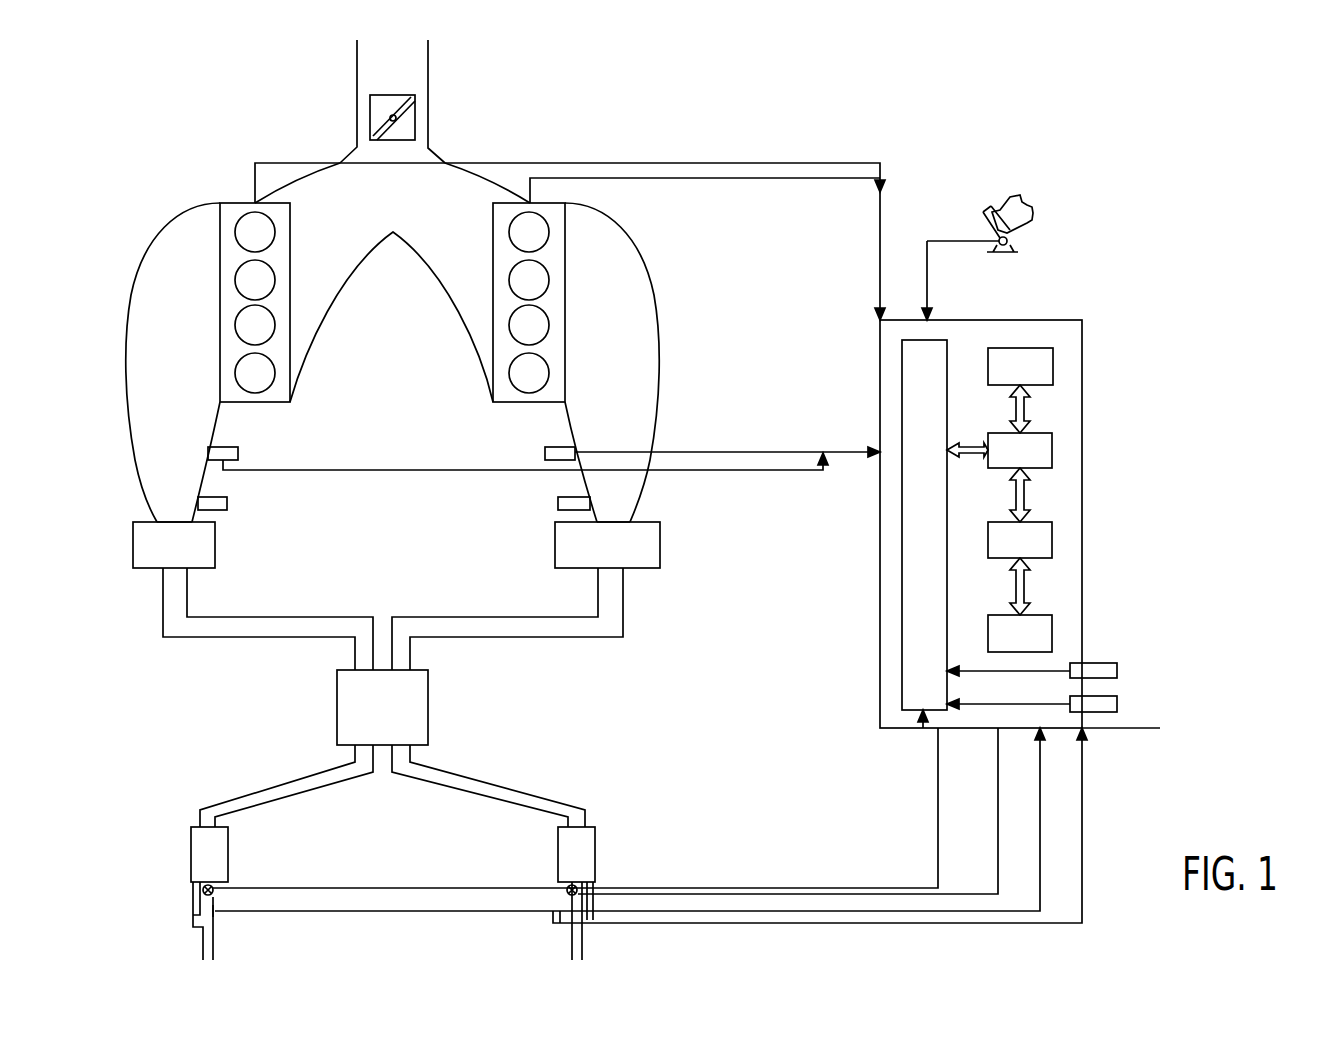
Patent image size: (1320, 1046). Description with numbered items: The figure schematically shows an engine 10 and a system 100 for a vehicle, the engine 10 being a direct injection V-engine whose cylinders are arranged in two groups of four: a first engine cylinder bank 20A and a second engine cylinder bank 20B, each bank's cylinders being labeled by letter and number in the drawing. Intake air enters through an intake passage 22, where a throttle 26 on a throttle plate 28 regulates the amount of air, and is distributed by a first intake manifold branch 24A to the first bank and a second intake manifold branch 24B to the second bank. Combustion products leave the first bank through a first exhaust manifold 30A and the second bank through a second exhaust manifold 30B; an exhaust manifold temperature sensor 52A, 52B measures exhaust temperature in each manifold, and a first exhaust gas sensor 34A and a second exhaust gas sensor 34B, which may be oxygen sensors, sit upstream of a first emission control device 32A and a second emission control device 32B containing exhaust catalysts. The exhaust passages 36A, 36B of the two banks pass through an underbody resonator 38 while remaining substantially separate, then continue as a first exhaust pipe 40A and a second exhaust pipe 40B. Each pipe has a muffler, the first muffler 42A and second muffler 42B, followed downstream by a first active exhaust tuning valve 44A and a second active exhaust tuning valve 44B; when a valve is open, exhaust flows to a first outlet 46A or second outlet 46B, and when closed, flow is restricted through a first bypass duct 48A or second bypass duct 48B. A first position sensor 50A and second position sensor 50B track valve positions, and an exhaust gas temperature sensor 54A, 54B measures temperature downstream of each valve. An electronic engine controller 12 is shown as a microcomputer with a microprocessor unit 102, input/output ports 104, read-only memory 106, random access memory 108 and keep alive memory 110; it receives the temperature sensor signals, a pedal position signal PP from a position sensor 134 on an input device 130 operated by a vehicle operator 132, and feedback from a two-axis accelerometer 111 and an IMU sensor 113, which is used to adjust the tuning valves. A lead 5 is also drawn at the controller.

The engine 10 is at (231, 108).
The system 100 is at (557, 68).
The intake passage 22 is at (402, 77).
The throttle 26 is at (360, 105).
The throttle plate 28 is at (394, 122).
The second engine cylinder bank 20B is at (256, 203).
The first engine cylinder bank 20A is at (530, 203).
The second intake manifold branch 24B is at (318, 231).
The first intake manifold branch 24A is at (440, 231).
The second exhaust manifold 30B is at (148, 430).
The first exhaust manifold 30A is at (612, 430).
The exhaust manifold temperature sensor 52B is at (238, 450).
The exhaust manifold temperature sensor 52A is at (545, 450).
The second exhaust gas sensor 34B is at (227, 500).
The first exhaust gas sensor 34A is at (558, 500).
The second emission control device 32B is at (159, 555).
The first emission control device 32A is at (592, 555).
The exhaust passage 36B is at (283, 615).
The exhaust passage 36A is at (487, 615).
The underbody resonator 38 is at (372, 715).
The second exhaust pipe 40B is at (302, 797).
The first exhaust pipe 40A is at (483, 797).
The second muffler 42B is at (196, 865).
The first muffler 42A is at (564, 865).
The second active exhaust tuning valve 44B is at (222, 889).
The first active exhaust tuning valve 44A is at (556, 888).
The second bypass duct 48B is at (196, 893).
The first bypass duct 48A is at (594, 898).
The second outlet 46B is at (190, 921).
The first outlet 46A is at (593, 921).
The second position sensor 50B is at (240, 894).
The first position sensor 50A is at (553, 912).
The exhaust gas temperature sensor 54B is at (215, 912).
The exhaust gas temperature sensor 54A is at (556, 914).
The input device 130 is at (978, 223).
The vehicle operator 132 is at (1028, 208).
The position sensor 134 is at (1010, 242).
The pedal position signal PP is at (930, 300).
The electronic engine controller 12 is at (1072, 320).
The input/output ports 104 is at (947, 345).
The read-only memory 106 is at (1053, 362).
The microprocessor unit 102 is at (1053, 447).
The random access memory 108 is at (1053, 538).
The keep alive memory 110 is at (1053, 630).
The two-axis accelerometer 111 is at (1117, 663).
The inertial measurement unit sensor 113 is at (1117, 696).
The vehicle 5 is at (1121, 735).